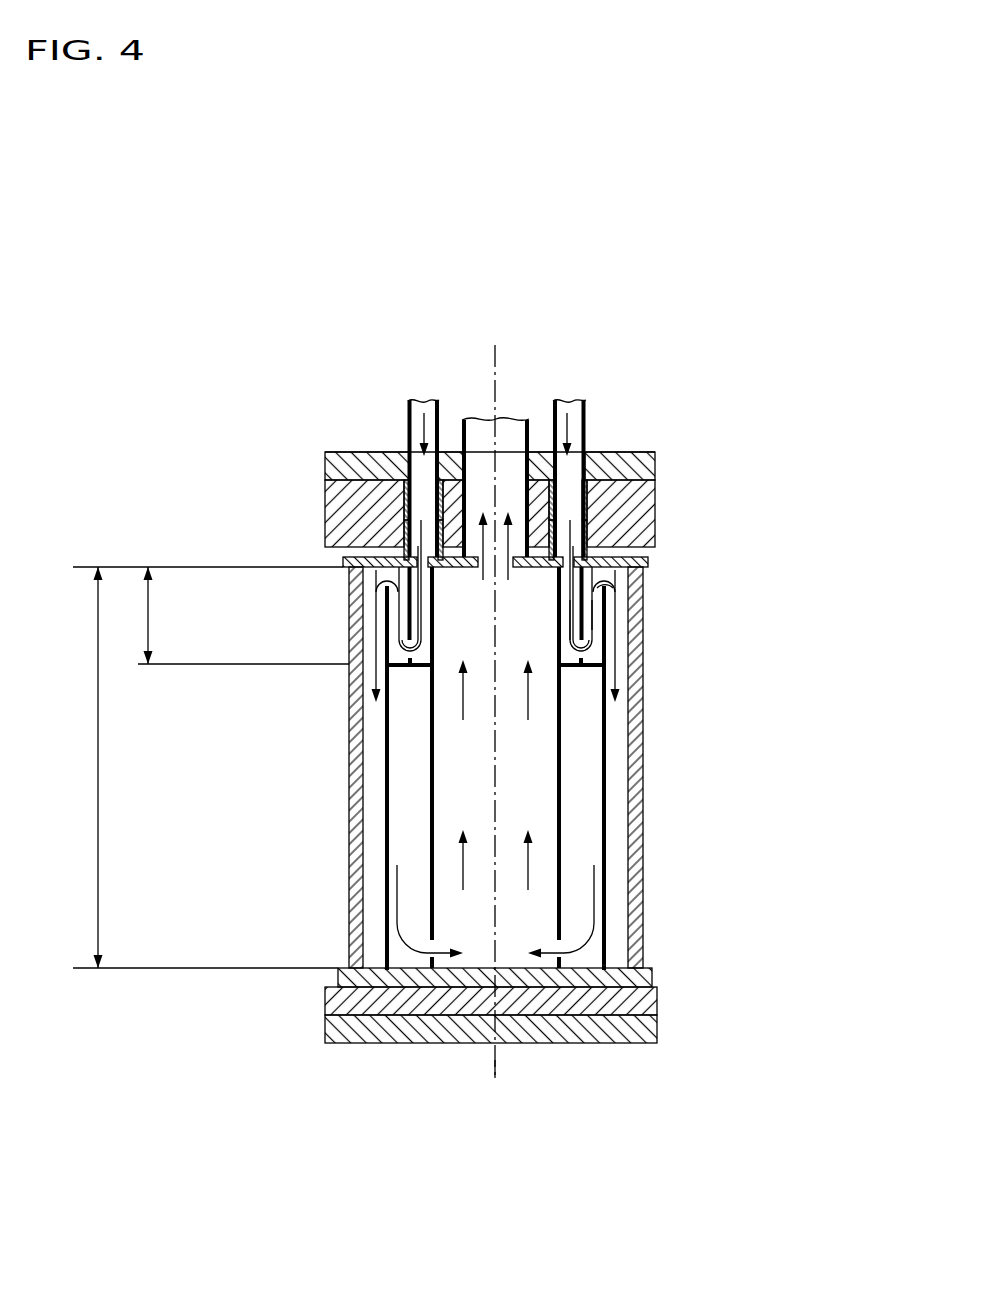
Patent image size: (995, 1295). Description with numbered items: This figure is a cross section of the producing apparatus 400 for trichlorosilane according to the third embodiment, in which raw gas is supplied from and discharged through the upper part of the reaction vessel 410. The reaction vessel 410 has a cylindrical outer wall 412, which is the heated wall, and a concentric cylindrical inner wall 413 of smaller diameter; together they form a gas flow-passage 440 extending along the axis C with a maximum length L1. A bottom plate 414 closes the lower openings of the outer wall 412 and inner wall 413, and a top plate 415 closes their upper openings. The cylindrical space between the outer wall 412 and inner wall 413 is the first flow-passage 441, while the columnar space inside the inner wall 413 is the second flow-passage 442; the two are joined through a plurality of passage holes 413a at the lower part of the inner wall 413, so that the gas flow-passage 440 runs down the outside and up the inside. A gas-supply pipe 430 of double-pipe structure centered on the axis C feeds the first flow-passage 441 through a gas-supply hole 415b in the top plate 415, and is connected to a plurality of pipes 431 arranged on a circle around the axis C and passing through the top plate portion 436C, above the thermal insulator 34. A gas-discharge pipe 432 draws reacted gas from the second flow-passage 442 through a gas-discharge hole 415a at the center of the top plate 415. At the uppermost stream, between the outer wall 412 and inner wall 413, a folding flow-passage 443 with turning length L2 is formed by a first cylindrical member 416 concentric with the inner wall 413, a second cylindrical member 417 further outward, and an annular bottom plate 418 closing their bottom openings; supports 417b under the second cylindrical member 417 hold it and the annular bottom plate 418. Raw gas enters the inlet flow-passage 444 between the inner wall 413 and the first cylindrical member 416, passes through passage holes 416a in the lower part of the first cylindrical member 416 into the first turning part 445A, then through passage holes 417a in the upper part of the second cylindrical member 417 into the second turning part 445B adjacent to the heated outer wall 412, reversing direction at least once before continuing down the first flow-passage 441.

The producing apparatus 400 is at (325, 405).
The gas-supply pipe 430 is at (588, 452).
The pipes 431 is at (438, 407).
The gas-discharge pipe 432 is at (527, 420).
The top plate portion 436C is at (327, 458).
The thermal insulator 34 is at (335, 500).
The top plate 415 is at (650, 559).
The gas-discharge hole 415a is at (587, 493).
The gas-supply hole 415b is at (590, 510).
The reaction vessel 410 is at (650, 892).
The outer wall 412 is at (643, 703).
The inner wall 413 is at (562, 733).
The passage holes 413a is at (563, 950).
The bottom plate 414 is at (340, 977).
The first cylindrical member 416 is at (403, 630).
The passage holes 416a is at (407, 661).
The second cylindrical member 417 is at (386, 600).
The passage holes 417a is at (383, 583).
The supports 417b is at (387, 773).
The annular bottom plate 418 is at (378, 715).
The folding flow-passage 443 is at (802, 587).
The inlet flow-passage 444 is at (572, 630).
The first turning part 445A is at (590, 614).
The second turning part 445B is at (620, 593).
The gas flow-passage 440 is at (677, 1128).
The first flow-passage 441 is at (597, 963).
The second flow-passage 442 is at (515, 957).
The axis C is at (492, 1068).
The maximum length L1 is at (200, 767).
The turning length L2 is at (229, 615).